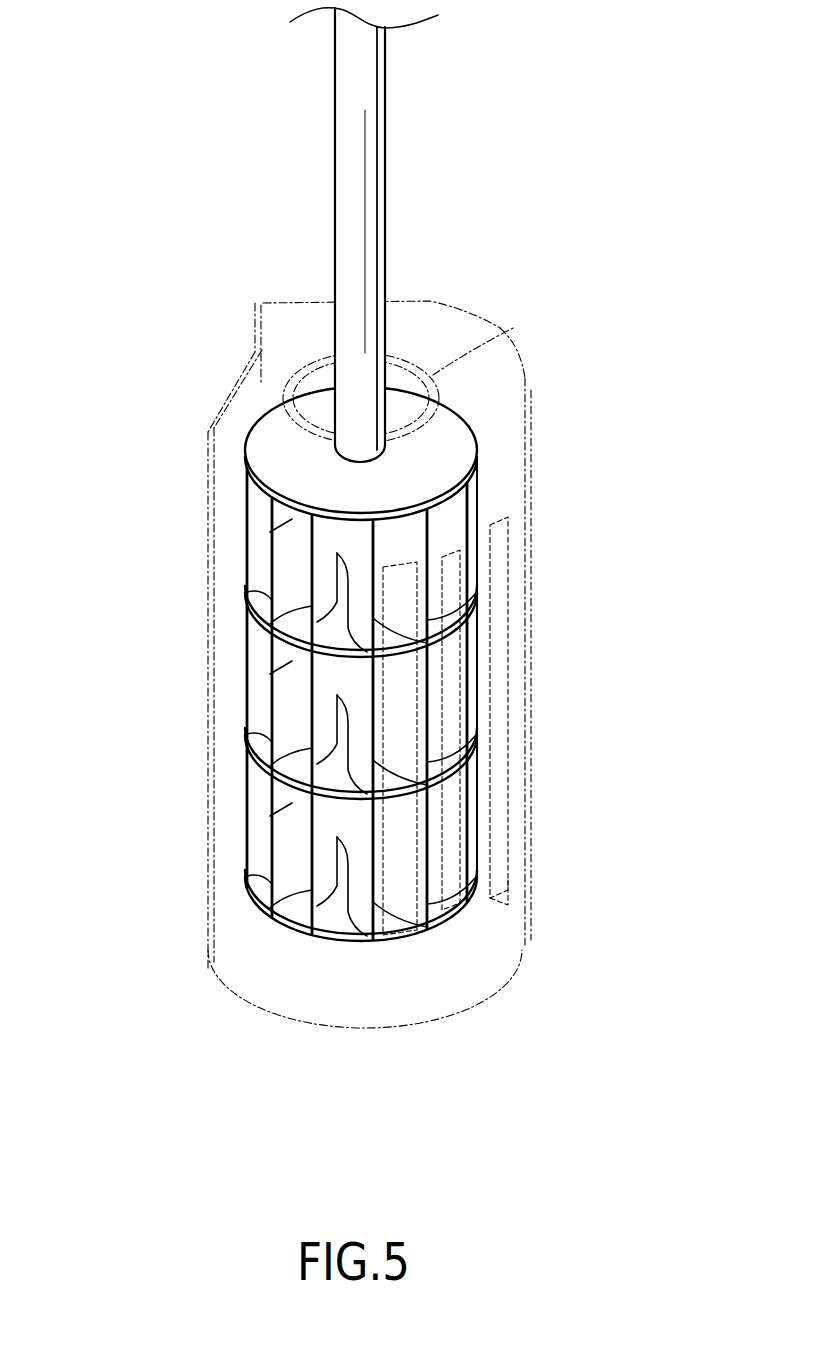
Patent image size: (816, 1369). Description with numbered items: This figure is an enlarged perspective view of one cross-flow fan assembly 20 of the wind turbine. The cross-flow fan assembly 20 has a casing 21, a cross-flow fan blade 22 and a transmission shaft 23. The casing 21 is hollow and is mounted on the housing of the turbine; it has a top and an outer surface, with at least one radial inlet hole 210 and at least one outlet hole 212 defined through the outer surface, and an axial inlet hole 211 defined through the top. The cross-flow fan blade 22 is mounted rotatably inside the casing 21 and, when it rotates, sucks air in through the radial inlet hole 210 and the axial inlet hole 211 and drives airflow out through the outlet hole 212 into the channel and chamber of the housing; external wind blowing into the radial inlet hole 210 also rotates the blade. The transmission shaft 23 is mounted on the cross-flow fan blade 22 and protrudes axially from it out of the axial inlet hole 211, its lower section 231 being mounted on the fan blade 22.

The cross-flow fan assembly 20 is at (542, 797).
The casing 21 is at (527, 380).
The inlet hole 210 is at (530, 552).
The axial inlet hole 211 is at (500, 336).
The outlet hole 212 is at (213, 473).
The cross-flow fan blade 22 is at (292, 511).
The transmission shaft 23 is at (373, 188).
The lower section 231 is at (378, 248).